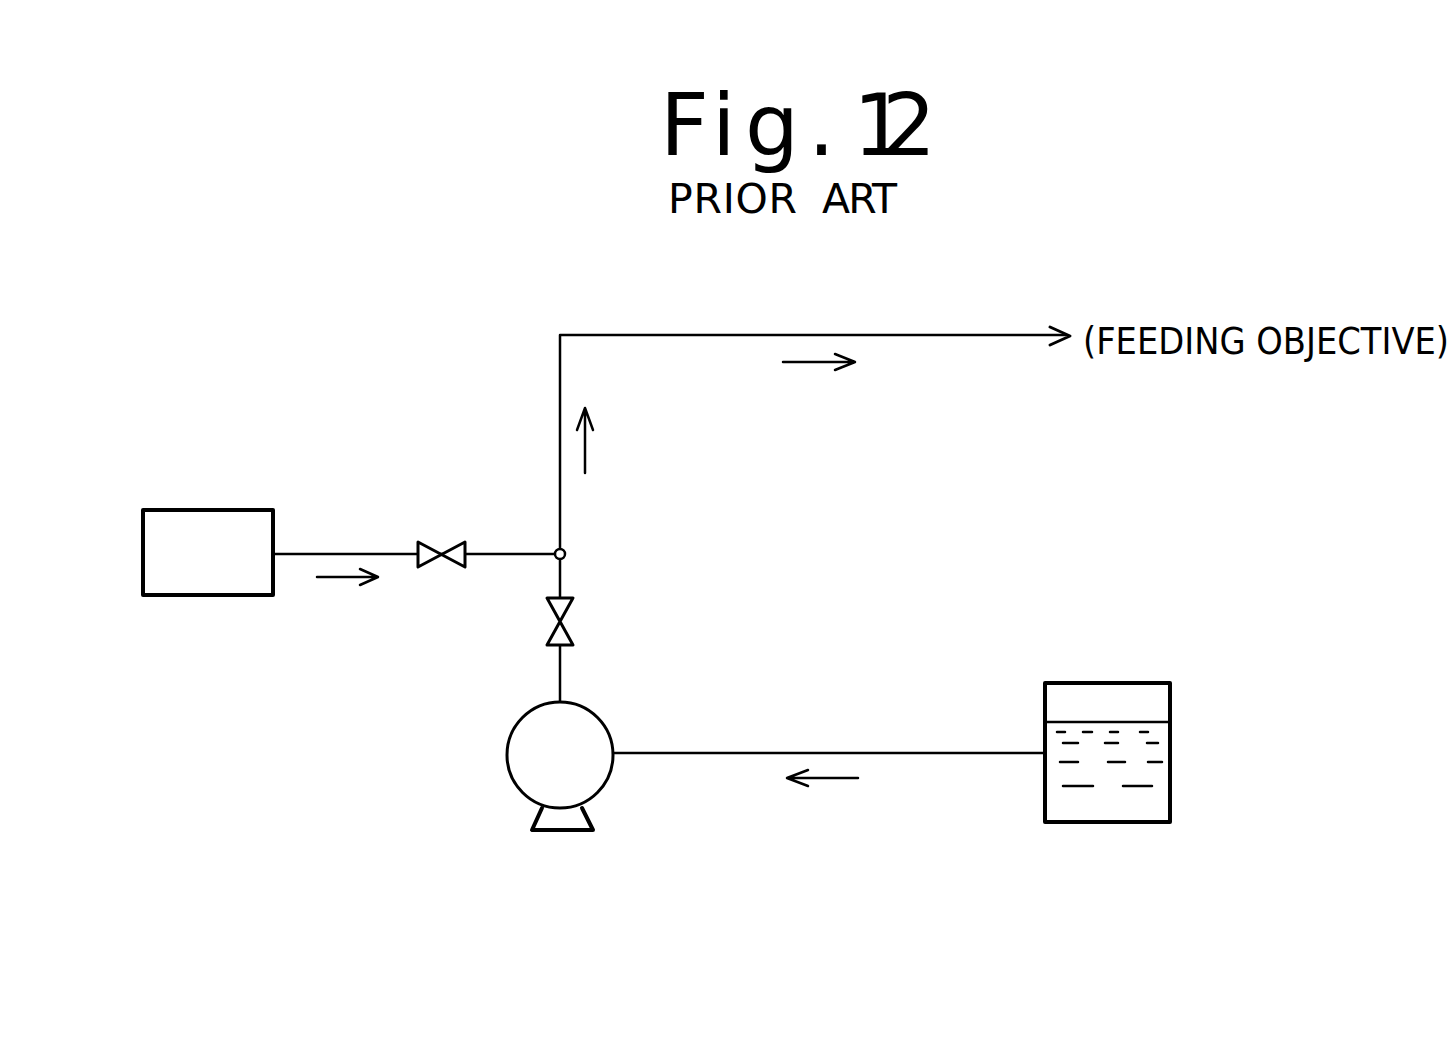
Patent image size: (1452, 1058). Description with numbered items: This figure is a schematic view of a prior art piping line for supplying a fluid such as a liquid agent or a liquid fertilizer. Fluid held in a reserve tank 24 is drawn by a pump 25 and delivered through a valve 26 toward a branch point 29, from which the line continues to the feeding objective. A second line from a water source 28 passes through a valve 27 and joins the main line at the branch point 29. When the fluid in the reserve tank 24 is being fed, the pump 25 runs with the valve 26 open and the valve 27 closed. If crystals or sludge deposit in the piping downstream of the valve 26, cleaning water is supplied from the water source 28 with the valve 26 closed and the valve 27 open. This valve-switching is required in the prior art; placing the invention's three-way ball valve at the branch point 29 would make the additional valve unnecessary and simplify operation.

The reserve tank 24 is at (1155, 797).
The pump 25 is at (530, 783).
The valve 26 is at (570, 632).
The valve 27 is at (441, 542).
The water source 28 is at (212, 577).
The branch point 29 is at (567, 551).